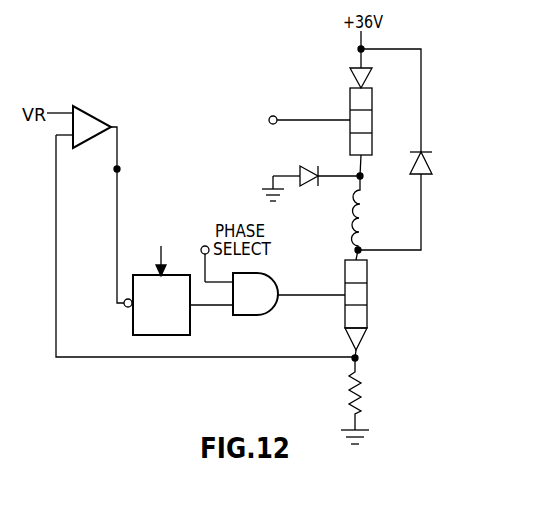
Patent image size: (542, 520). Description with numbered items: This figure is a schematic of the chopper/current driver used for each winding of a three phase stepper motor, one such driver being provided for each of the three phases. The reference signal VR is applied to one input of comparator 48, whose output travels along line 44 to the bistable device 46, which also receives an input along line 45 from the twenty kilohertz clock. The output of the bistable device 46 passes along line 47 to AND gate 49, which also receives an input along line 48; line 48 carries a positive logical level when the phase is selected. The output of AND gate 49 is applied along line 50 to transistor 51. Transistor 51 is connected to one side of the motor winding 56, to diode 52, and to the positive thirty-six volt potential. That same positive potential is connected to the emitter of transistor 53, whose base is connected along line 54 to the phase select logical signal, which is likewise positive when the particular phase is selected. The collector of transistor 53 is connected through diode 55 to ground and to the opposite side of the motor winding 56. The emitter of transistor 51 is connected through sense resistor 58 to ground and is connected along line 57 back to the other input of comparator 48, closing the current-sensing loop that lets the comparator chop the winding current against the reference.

The line 44 is at (117, 169).
The line 45 is at (159, 258).
The bistable device 46 is at (186, 317).
The line 47 is at (257, 316).
The comparator 48 is at (101, 117).
The AND gate 49 is at (272, 292).
The line 50 is at (296, 297).
The transistor 51 is at (367, 290).
The diode 52 is at (416, 172).
The transistor 53 is at (373, 106).
The line 54 is at (257, 118).
The diode 55 is at (319, 168).
The motor winding 56 is at (350, 218).
The line 57 is at (230, 357).
The sense resistor 58 is at (350, 391).